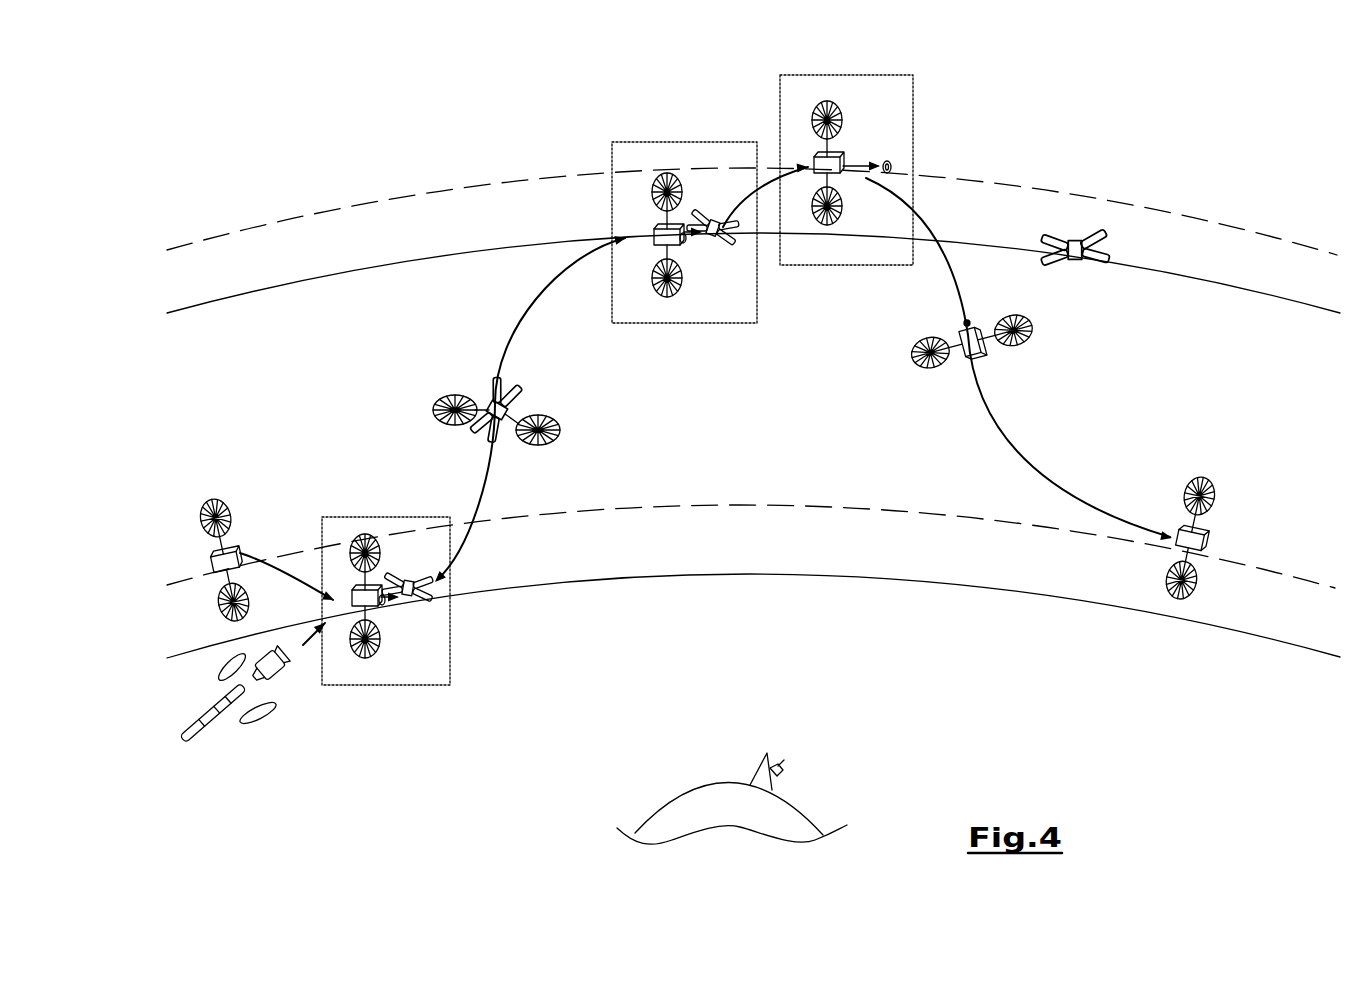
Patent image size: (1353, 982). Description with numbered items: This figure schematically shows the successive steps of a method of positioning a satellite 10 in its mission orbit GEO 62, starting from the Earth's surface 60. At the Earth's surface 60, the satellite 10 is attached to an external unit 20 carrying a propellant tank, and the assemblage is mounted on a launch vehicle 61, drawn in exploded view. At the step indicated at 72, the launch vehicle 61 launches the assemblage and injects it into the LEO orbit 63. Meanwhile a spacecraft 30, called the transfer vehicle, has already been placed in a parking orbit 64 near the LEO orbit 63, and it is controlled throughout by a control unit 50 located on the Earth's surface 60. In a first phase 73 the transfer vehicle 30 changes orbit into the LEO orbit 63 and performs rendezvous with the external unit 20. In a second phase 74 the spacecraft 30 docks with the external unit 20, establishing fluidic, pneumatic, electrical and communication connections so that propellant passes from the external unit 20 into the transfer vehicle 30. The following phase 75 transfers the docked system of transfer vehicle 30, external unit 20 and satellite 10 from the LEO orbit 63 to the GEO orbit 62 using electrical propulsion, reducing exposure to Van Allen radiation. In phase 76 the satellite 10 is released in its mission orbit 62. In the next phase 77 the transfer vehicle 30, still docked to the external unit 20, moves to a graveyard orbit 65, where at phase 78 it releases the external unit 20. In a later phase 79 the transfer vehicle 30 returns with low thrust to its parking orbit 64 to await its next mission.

The satellite 10 is at (712, 243).
The external unit 20 is at (890, 164).
The spacecraft (transfer vehicle) 30 is at (835, 155).
The control unit of the spacecraft 50 is at (770, 755).
The Earth's surface 60 is at (668, 795).
The launch vehicle 61 is at (277, 703).
The mission orbit GEO 62 is at (1180, 272).
The LEO orbit 63 is at (740, 578).
The parking orbit 64 is at (752, 503).
The graveyard orbit 65 is at (1190, 213).
The launch and injection step 72 is at (307, 630).
The first phase 73 is at (288, 562).
The second phase 74 is at (355, 517).
The transfer phase 75 is at (527, 307).
The satellite release phase 76 is at (612, 142).
The graveyard transfer phase 77 is at (773, 167).
The external unit release phase 78 is at (873, 75).
The return phase 79 is at (1033, 467).